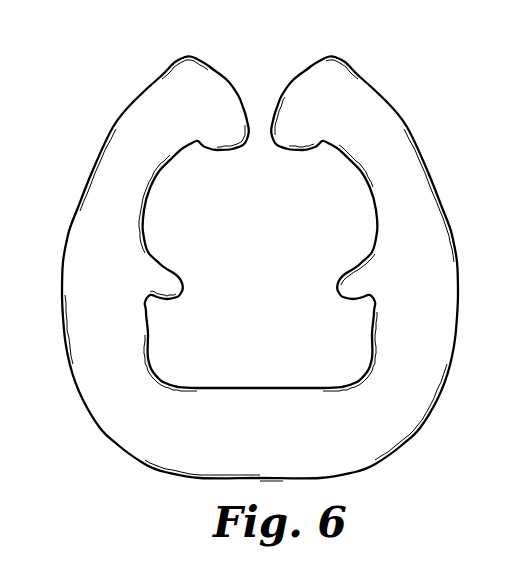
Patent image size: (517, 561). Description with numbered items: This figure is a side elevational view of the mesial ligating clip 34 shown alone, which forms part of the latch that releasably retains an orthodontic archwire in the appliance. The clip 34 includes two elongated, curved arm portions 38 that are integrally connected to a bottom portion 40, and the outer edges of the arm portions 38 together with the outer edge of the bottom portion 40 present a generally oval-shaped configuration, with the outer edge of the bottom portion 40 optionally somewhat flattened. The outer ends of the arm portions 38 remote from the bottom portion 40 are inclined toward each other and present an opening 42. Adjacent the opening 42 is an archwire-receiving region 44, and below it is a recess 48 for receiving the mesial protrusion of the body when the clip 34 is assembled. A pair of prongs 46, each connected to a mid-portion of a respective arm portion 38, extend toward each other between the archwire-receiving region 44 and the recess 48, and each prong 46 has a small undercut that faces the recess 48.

The mesial ligating clip 34 is at (420, 124).
The arm portions 38 is at (87, 218).
The bottom portion 40 is at (315, 448).
The opening 42 is at (260, 97).
The archwire-receiving region 44 is at (197, 190).
The prongs 46 is at (352, 285).
The recess 48 is at (183, 360).